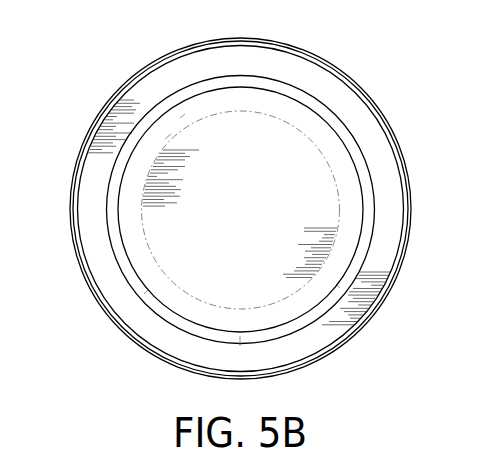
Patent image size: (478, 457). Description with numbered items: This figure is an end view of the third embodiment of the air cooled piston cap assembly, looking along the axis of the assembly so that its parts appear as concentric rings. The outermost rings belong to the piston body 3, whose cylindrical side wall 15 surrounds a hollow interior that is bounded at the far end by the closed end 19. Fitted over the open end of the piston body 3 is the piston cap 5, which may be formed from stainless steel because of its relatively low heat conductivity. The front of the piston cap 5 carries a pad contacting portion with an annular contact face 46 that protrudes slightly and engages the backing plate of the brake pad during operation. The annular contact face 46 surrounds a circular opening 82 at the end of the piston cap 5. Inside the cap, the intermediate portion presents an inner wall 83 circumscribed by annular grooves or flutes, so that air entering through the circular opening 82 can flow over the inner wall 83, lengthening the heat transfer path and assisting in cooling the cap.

The piston body 3 is at (92, 312).
The piston cap 5 is at (371, 91).
The cylindrical side wall 15 is at (90, 131).
The closed end 19 is at (227, 218).
The annular contact face 46 is at (375, 148).
The circular opening 82 is at (295, 138).
The inner wall 83 is at (177, 104).